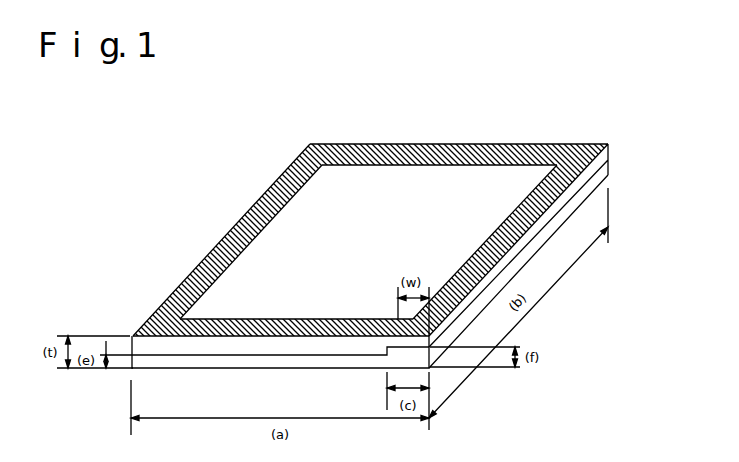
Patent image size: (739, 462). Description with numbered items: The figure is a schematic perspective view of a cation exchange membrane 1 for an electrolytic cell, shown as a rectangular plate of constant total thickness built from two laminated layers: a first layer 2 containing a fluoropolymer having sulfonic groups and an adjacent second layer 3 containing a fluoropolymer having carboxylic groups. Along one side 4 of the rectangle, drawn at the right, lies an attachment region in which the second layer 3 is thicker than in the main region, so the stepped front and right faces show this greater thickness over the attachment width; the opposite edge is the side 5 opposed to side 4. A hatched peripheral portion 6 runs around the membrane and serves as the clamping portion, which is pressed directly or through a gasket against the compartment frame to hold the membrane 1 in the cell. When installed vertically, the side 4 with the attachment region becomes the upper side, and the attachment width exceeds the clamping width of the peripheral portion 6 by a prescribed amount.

The cation exchange membrane 1 is at (370, 241).
The first layer 2 is at (370, 239).
The second layer 3 is at (346, 364).
The one side of rectangular cation exchange membrane 4 is at (607, 163).
The side opposed to side 4 5 is at (218, 240).
The peripheral portion 6 is at (553, 146).